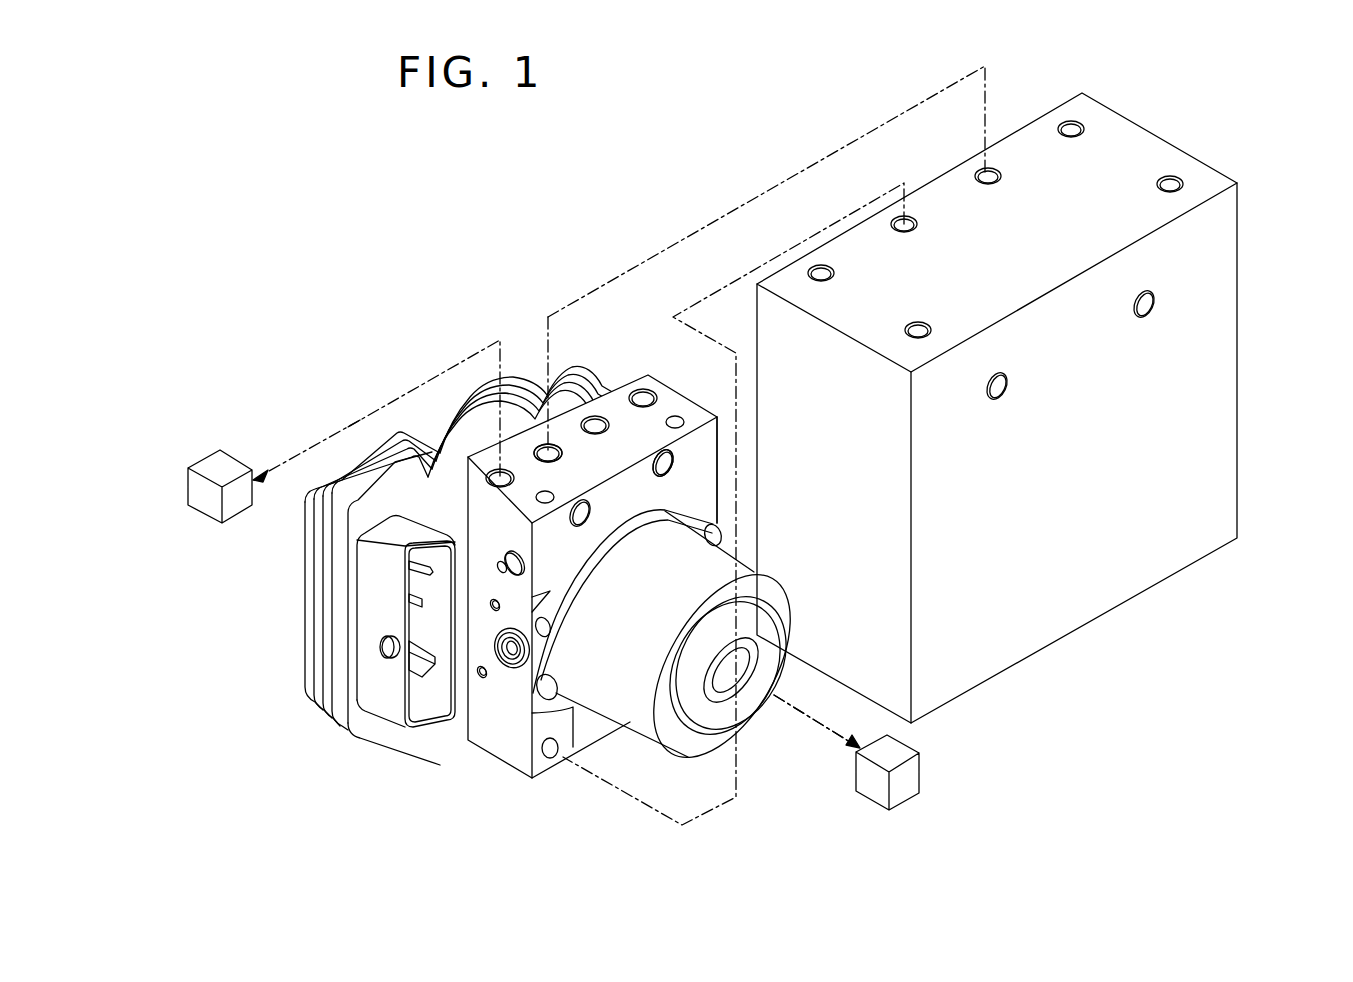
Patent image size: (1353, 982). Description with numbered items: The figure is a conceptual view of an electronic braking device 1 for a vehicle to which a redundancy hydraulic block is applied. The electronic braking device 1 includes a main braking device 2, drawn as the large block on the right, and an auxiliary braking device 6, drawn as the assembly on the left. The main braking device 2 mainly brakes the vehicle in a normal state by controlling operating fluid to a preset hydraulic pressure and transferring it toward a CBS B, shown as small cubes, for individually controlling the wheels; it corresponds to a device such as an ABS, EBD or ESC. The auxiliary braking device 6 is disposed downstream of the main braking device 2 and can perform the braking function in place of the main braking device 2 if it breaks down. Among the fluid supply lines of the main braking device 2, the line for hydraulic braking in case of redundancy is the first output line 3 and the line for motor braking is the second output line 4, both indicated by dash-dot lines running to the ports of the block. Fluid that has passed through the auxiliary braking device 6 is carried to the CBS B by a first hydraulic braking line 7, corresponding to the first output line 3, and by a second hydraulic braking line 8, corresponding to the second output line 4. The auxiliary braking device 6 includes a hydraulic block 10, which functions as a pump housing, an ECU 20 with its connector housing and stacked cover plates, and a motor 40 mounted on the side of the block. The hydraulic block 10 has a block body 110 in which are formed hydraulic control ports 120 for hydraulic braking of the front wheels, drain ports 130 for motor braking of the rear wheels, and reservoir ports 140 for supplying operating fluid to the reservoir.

The electronic braking device 1 is at (236, 141).
The main braking device 2 is at (1259, 236).
The first output line 3 is at (680, 312).
The second output line 4 is at (766, 191).
The auxiliary braking device 6 is at (398, 766).
The first hydraulic braking line 7 is at (410, 391).
The second hydraulic braking line 8 is at (816, 724).
The hydraulic block 10 is at (503, 730).
The ECU 20 is at (388, 502).
The motor 40 is at (642, 700).
The block body 110 is at (688, 498).
The hydraulic control port 120 is at (556, 752).
The drain port 130 is at (548, 446).
The reservoir port 140 is at (667, 463).
The CBS B is at (213, 462).